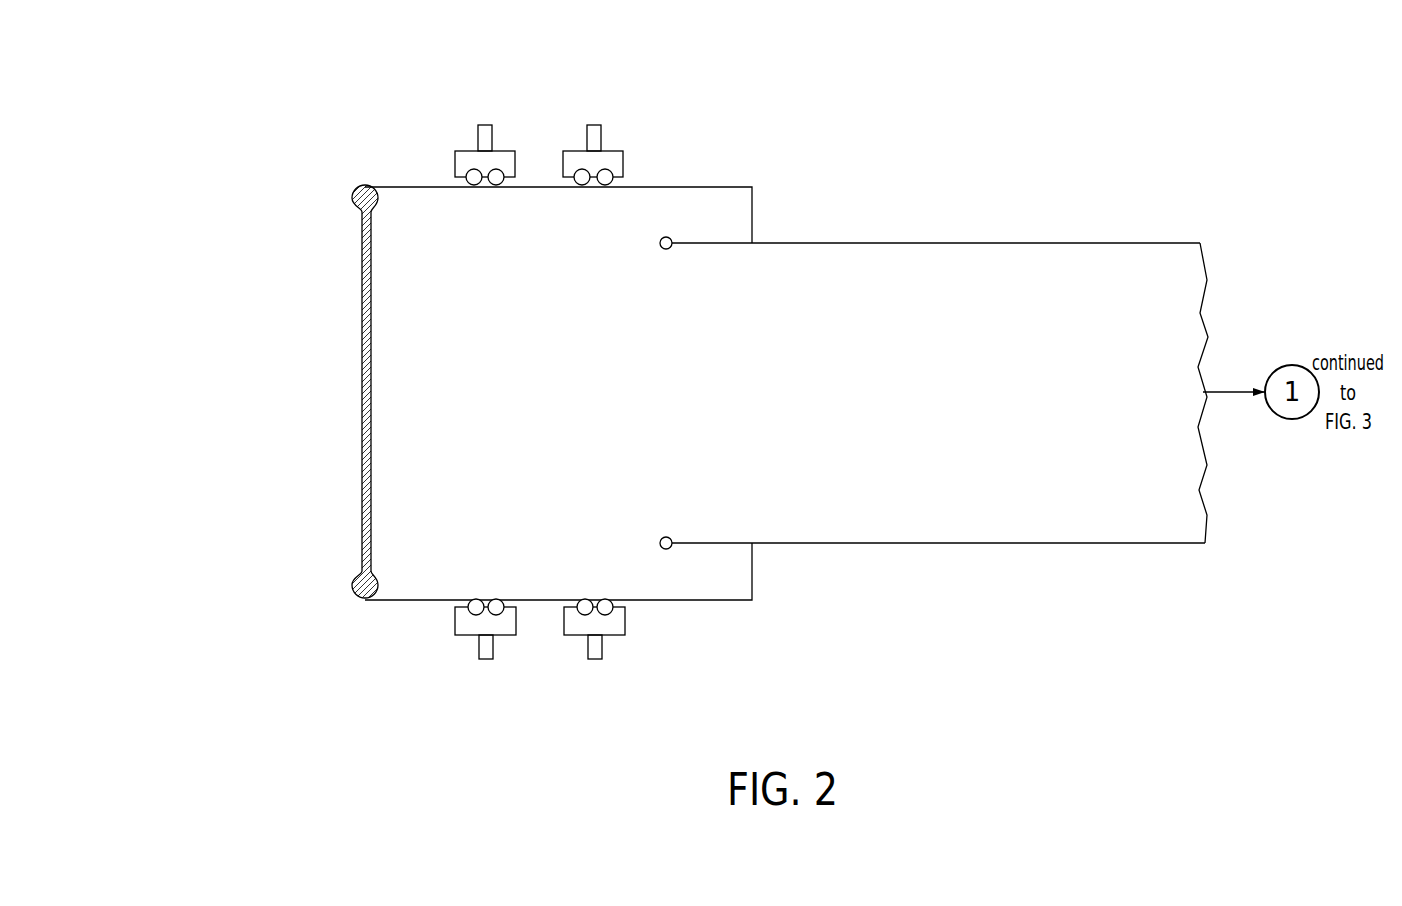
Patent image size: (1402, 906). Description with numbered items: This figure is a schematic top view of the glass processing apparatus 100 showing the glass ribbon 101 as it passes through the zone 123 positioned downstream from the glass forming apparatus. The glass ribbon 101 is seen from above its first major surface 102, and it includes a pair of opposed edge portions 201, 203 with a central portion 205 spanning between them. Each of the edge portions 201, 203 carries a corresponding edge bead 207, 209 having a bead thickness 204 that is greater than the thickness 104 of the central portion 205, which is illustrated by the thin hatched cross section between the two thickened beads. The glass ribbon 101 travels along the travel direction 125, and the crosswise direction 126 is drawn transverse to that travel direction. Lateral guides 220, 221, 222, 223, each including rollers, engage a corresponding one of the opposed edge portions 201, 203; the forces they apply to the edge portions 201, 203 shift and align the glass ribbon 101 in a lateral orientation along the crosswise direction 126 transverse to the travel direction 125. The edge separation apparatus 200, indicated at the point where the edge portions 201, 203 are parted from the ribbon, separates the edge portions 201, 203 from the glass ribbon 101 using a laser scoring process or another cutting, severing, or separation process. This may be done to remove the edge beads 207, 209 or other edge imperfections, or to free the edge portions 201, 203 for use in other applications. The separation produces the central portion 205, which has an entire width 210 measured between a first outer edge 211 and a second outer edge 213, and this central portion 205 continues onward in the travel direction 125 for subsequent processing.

The glass processing apparatus 100 is at (1120, 113).
The glass ribbon 101 is at (612, 297).
The first major surface 102 is at (503, 406).
The thickness 104 is at (413, 392).
The zone 123 is at (351, 360).
The travel direction 125 is at (1137, 662).
The crosswise direction 126 is at (227, 453).
The edge separation apparatus 200 is at (658, 540).
The edge portion 201 is at (722, 601).
The edge portion 203 is at (705, 210).
The bead thickness 204 is at (352, 199).
The central portion 205 is at (1160, 265).
The edge bead 207 is at (363, 593).
The edge bead 209 is at (360, 188).
The width 210 is at (887, 243).
The first outer edge 211 is at (1037, 543).
The second outer edge 213 is at (1033, 243).
The lateral guide 220 is at (483, 660).
The lateral guide 221 is at (483, 125).
The lateral guide 222 is at (593, 660).
The lateral guide 223 is at (592, 125).